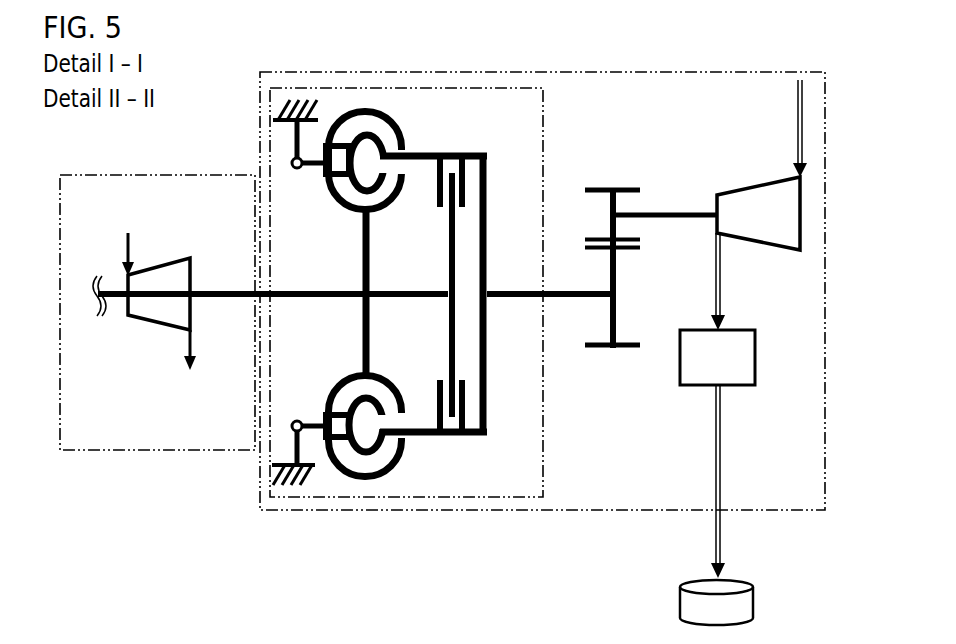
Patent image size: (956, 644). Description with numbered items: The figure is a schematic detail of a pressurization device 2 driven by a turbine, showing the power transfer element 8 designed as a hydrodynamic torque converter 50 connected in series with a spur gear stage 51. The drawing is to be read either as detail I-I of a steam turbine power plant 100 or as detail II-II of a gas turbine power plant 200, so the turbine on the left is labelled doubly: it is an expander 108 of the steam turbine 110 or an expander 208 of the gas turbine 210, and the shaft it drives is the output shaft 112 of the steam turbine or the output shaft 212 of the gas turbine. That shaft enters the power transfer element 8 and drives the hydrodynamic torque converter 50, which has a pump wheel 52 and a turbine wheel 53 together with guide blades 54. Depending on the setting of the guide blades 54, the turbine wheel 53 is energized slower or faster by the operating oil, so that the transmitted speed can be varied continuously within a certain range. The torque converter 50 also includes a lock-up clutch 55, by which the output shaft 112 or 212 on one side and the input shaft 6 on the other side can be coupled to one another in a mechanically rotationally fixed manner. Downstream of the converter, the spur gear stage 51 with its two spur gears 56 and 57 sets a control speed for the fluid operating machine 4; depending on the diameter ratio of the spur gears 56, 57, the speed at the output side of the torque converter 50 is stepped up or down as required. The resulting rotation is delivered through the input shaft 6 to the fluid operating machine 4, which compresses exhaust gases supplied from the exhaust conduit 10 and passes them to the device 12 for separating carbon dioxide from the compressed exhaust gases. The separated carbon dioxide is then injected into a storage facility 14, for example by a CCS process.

The pressurization device 2 is at (777, 72).
The fluid operating machine 4 is at (779, 227).
The input shaft 6 is at (684, 202).
The power transfer element 8 is at (543, 462).
The exhaust conduit 10 is at (797, 150).
The device for separating carbon dioxide 12 is at (730, 370).
The storage facility 14 is at (728, 622).
The hydrodynamic torque converter 50 is at (557, 86).
The spur gear stage 51 is at (617, 223).
The pump wheel 52 is at (331, 376).
The turbine wheel 53 is at (411, 126).
The guide blades 54 is at (318, 177).
The lock-up clutch 55 is at (455, 452).
The spur gear 56 is at (645, 302).
The spur gear 57 is at (603, 224).
The steam turbine power plant 100 is at (114, 569).
The gas turbine power plant 200 is at (81, 585).
The expander 108 is at (146, 338).
The expander 208 is at (130, 370).
The steam turbine 110 is at (254, 356).
The gas turbine 210 is at (254, 356).
The output shaft 112 is at (183, 236).
The output shaft 212 is at (152, 239).